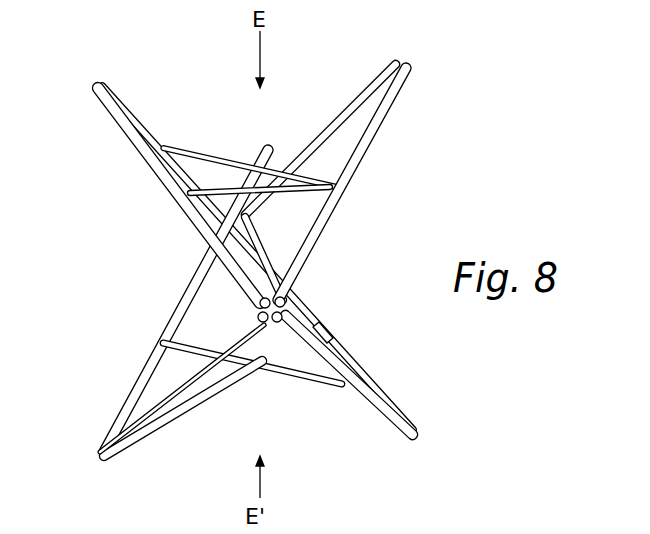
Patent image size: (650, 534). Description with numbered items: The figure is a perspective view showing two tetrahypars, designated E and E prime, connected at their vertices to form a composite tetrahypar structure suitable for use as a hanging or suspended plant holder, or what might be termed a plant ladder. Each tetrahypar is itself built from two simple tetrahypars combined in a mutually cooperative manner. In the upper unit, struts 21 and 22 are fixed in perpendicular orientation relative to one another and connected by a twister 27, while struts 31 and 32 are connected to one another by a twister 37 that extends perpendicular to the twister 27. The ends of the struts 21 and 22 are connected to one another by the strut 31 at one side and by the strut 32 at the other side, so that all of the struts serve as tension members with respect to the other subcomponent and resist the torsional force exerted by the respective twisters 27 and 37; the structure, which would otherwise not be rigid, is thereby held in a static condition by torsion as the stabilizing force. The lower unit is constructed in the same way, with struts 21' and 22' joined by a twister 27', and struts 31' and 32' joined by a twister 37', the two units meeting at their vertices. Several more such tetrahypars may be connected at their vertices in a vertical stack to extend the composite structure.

The strut 21 is at (320, 131).
The strut 21' is at (352, 281).
The strut 22 is at (237, 258).
The strut 22' is at (182, 398).
The twister 27 is at (250, 151).
The twister 27' is at (221, 400).
The strut 31 is at (342, 184).
The strut 31' is at (349, 390).
The strut 32 is at (179, 173).
The strut 32' is at (171, 301).
The twister 37 is at (277, 242).
The twister 37' is at (267, 326).